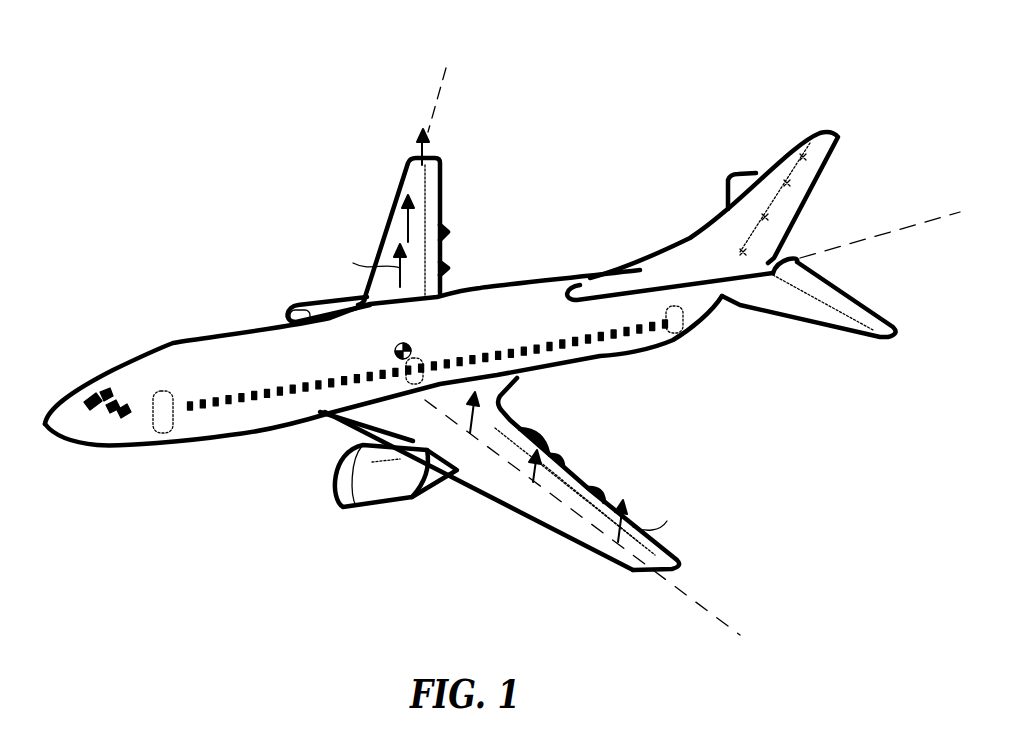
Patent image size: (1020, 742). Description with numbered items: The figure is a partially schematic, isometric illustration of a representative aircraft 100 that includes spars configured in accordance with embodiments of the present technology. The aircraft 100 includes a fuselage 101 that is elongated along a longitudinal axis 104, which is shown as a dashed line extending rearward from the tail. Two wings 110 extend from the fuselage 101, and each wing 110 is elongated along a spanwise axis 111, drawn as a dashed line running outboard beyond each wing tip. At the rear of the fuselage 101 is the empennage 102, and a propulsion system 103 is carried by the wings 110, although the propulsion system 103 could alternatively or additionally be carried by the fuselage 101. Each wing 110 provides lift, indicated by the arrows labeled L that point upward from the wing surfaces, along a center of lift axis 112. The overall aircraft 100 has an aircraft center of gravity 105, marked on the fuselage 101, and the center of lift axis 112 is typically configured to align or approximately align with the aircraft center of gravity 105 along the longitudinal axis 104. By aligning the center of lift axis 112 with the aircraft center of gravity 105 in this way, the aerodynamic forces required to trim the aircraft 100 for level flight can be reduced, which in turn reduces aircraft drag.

The aircraft 100 is at (133, 189).
The fuselage 101 is at (180, 362).
The empennage 102 is at (828, 260).
The propulsion system 103 is at (303, 483).
The longitudinal axis 104 is at (878, 232).
The aircraft center of gravity 105 is at (410, 343).
The wings 110 is at (437, 155).
The spanwise axis 111 is at (443, 65).
The center of lift axis 112 is at (557, 497).